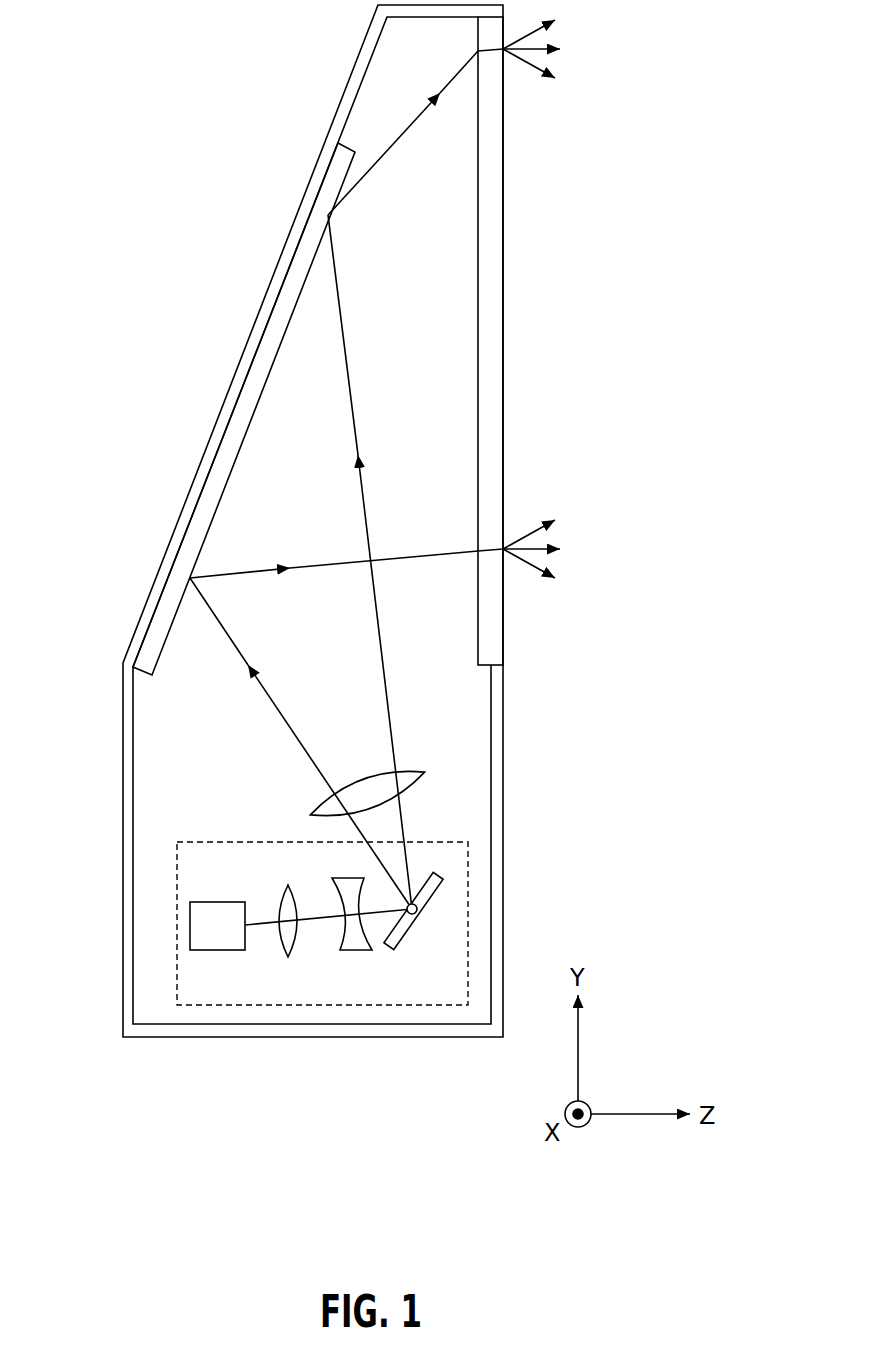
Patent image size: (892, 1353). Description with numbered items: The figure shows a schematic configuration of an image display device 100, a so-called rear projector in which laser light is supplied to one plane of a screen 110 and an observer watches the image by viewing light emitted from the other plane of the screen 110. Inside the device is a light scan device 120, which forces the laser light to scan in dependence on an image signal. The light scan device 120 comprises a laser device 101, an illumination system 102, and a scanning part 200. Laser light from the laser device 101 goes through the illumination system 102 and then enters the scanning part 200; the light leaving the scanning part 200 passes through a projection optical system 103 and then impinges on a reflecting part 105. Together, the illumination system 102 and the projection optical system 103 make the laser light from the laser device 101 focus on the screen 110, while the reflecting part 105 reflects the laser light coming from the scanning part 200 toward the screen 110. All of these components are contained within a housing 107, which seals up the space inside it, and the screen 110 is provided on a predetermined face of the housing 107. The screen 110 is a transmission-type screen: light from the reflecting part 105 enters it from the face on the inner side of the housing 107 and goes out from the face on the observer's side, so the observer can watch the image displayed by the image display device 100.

The image display device 100 is at (245, 113).
The laser device 101 is at (200, 930).
The illumination system 102 is at (370, 961).
The projection optical system 103 is at (412, 778).
The reflecting part 105 is at (172, 598).
The housing 107 is at (497, 852).
The screen 110 is at (497, 260).
The light scan device 120 is at (222, 842).
The scanning part 200 is at (407, 940).